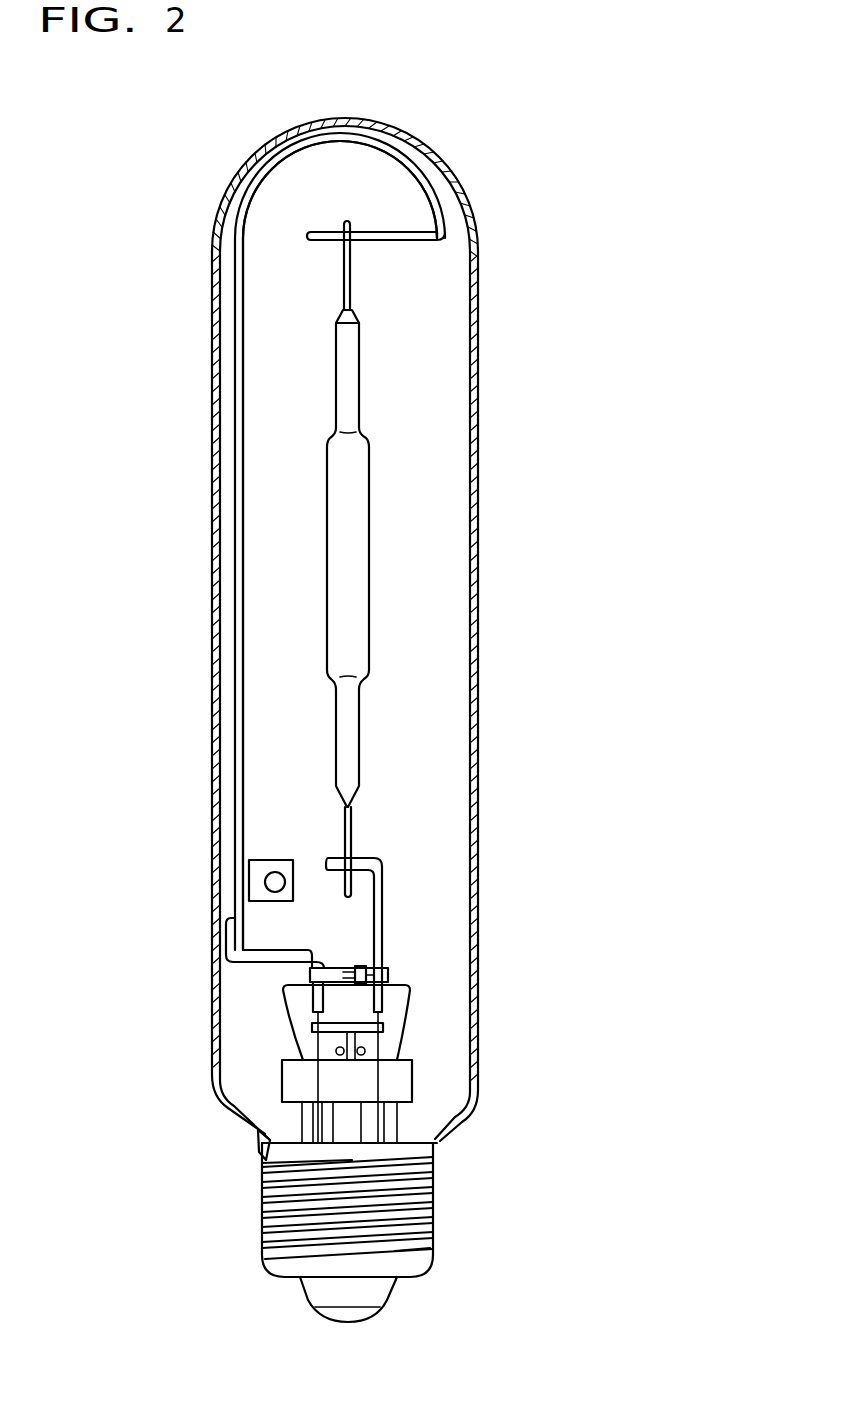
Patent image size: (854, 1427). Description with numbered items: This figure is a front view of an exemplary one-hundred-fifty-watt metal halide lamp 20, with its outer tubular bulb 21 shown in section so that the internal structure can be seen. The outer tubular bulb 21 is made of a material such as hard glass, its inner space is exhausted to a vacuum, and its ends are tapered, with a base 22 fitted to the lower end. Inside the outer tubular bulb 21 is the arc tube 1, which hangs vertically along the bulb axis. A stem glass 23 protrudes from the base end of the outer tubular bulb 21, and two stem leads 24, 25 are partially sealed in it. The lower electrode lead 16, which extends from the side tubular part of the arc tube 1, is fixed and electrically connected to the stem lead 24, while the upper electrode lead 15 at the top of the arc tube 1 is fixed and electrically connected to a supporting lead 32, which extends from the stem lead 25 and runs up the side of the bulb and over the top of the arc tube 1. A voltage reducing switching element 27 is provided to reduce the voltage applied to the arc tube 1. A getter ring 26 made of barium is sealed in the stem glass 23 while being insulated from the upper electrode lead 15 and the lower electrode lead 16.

The metal halide lamp 20 is at (486, 129).
The outer tubular bulb 21 is at (477, 395).
The base 22 is at (434, 1210).
The arc tube 1 is at (356, 561).
The upper electrode lead 15 is at (352, 272).
The lower electrode lead 16 is at (354, 830).
The stem glass 23 is at (399, 1004).
The stem lead 24 is at (384, 893).
The stem lead 25 is at (265, 962).
The getter ring 26 is at (392, 1033).
The voltage reducing switching element 27 is at (386, 941).
The supporting lead 32 is at (243, 385).